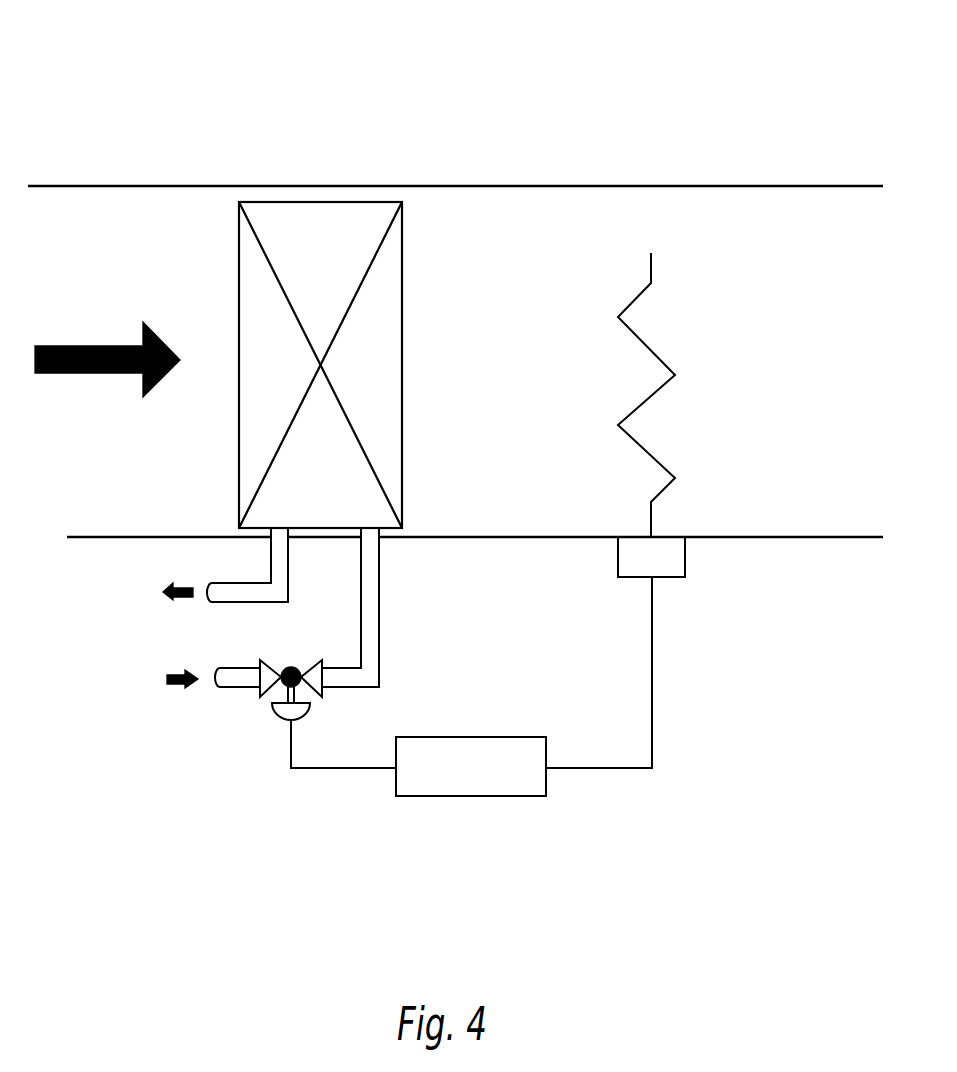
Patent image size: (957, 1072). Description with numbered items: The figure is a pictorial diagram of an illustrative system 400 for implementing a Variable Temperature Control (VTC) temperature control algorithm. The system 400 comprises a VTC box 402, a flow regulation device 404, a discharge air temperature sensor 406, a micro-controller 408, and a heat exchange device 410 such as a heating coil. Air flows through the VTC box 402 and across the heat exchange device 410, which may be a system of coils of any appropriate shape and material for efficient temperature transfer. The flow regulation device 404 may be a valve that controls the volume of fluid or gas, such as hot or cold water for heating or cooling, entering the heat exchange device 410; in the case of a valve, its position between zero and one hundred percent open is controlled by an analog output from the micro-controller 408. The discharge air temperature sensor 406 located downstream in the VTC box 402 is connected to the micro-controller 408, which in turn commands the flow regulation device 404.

The system 400 is at (214, 62).
The VTC box 402 is at (676, 176).
The flow regulation device 404 is at (288, 666).
The discharge air temperature sensor 406 is at (685, 556).
The micro-controller 408 is at (495, 796).
The heat exchange device 410 is at (402, 332).